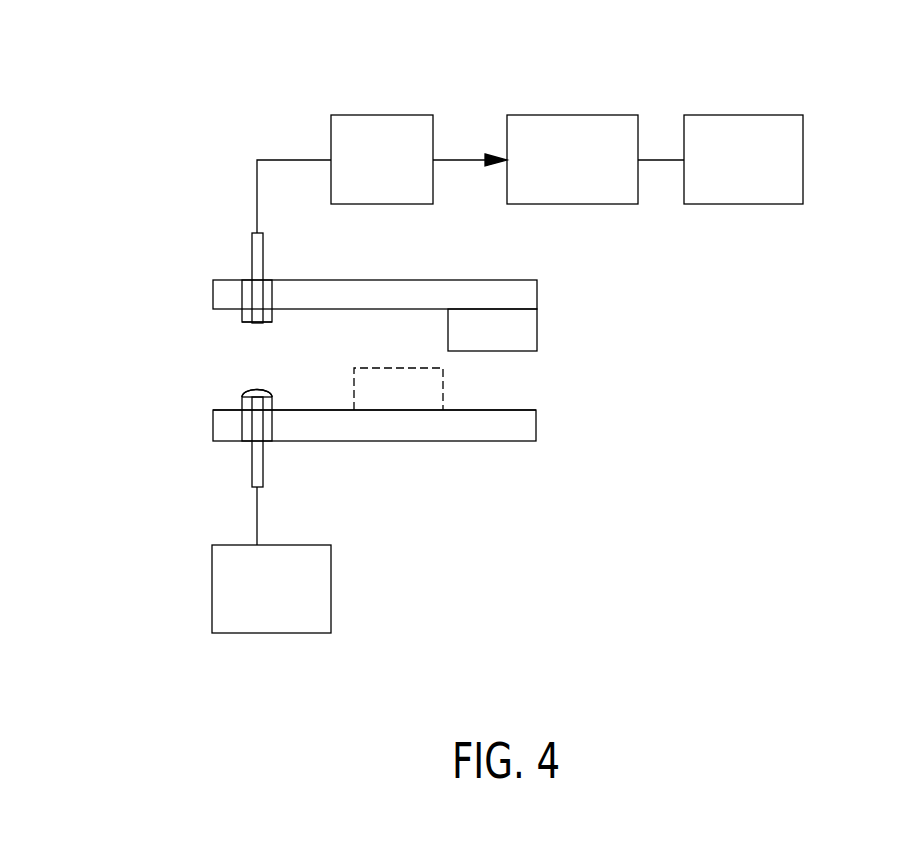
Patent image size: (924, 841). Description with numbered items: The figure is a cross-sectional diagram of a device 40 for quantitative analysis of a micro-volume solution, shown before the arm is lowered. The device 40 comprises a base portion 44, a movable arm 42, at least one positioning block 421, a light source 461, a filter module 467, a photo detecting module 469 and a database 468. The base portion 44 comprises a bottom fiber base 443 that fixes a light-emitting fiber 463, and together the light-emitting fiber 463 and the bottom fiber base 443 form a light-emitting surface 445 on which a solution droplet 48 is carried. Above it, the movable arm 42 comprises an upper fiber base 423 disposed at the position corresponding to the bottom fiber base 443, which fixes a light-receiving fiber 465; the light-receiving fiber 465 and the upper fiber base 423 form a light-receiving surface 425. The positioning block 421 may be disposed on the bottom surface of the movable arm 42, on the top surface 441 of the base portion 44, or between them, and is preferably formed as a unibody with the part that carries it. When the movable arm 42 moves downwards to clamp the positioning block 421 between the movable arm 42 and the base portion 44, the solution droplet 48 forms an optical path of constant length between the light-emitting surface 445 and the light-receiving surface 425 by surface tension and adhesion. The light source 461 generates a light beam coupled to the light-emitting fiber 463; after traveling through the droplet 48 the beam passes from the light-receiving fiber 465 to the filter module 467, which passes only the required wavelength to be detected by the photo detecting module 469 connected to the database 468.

The device for quantitative analysis of a micro-volume solution 40 is at (812, 35).
The movable arm 42 is at (402, 280).
The positioning block 421 is at (537, 325).
The upper fiber base 423 is at (272, 280).
The light-receiving surface 425 is at (243, 323).
The base portion 44 is at (507, 430).
The top surface 441 is at (510, 410).
The bottom fiber base 443 is at (267, 441).
The light-emitting surface 445 is at (263, 390).
The solution droplet 48 is at (243, 393).
The light source 461 is at (212, 607).
The light-emitting fiber 463 is at (252, 473).
The light-receiving fiber 465 is at (252, 245).
The filter module 467 is at (331, 147).
The database 468 is at (803, 143).
The photo detecting module 469 is at (615, 115).